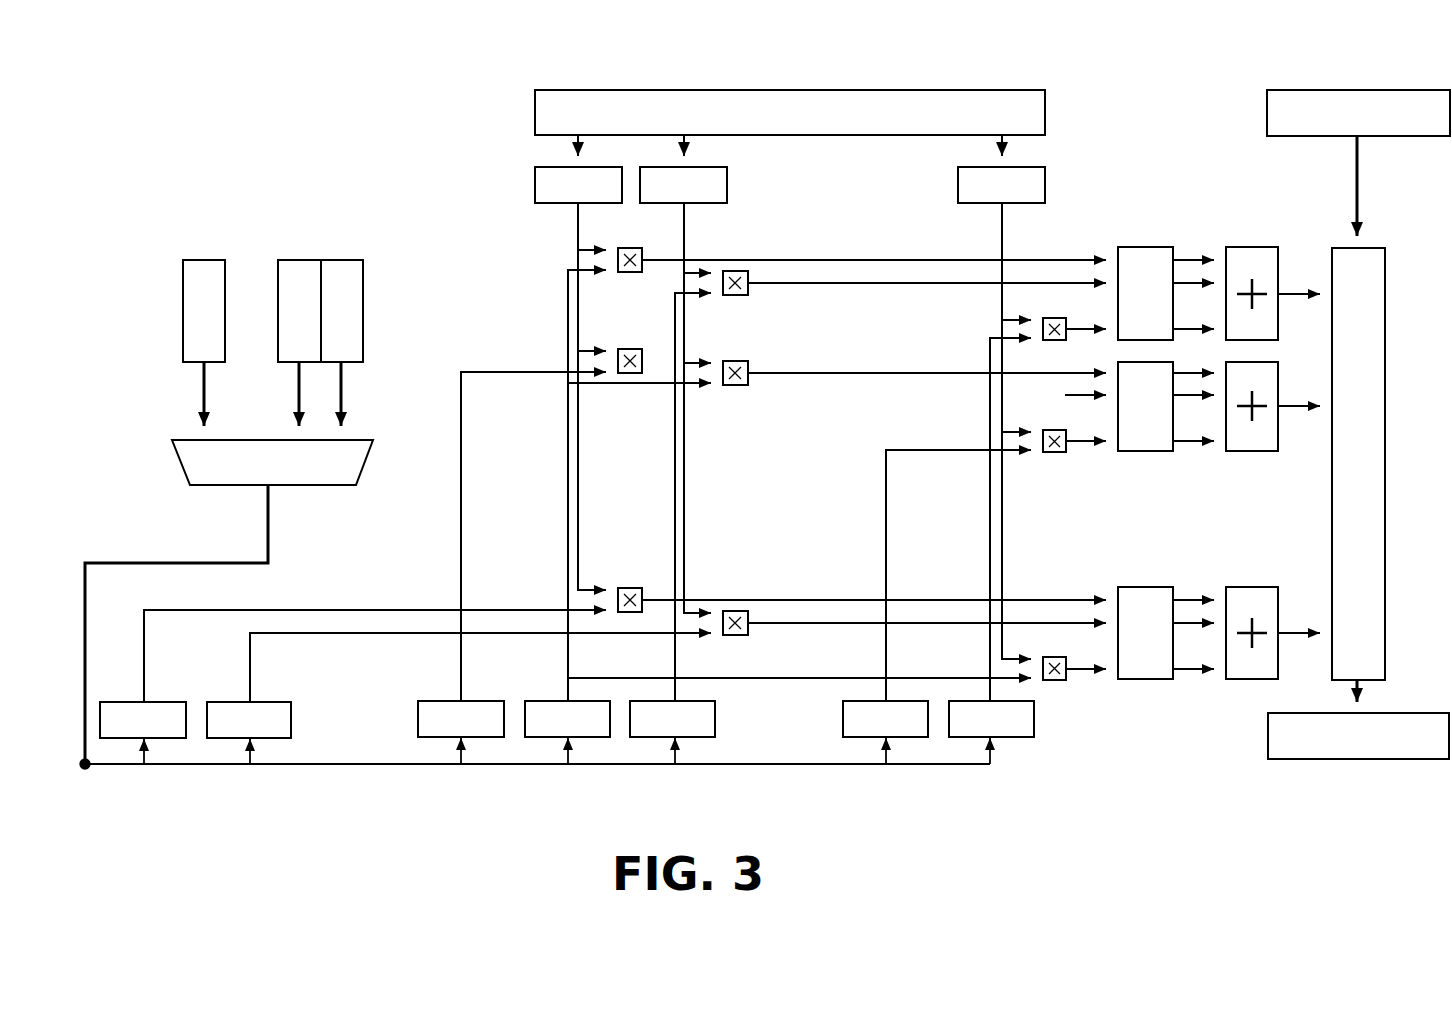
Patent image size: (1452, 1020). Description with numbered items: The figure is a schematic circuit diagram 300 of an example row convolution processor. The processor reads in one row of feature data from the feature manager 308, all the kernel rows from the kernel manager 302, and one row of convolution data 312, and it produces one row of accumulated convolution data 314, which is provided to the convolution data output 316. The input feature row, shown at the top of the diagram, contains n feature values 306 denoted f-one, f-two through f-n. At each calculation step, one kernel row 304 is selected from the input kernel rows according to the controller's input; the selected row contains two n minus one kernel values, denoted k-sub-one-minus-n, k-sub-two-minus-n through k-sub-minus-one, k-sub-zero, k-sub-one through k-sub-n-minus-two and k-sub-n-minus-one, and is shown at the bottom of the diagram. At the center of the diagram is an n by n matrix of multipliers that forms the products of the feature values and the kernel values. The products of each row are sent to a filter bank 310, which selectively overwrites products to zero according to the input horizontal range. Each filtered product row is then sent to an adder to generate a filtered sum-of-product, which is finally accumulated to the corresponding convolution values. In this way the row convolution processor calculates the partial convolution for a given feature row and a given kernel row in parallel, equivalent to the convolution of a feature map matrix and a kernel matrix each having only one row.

The schematic circuit diagram 300 is at (222, 82).
The kernel manager 302 is at (233, 421).
The kernel row 304 is at (510, 782).
The feature values 306 is at (538, 226).
The feature manager 308 is at (955, 72).
The filter bank 310 is at (1185, 232).
The convolution data 312 is at (1346, 73).
The accumulated convolution data 314 is at (1333, 232).
The convolution data output 316 is at (1297, 778).